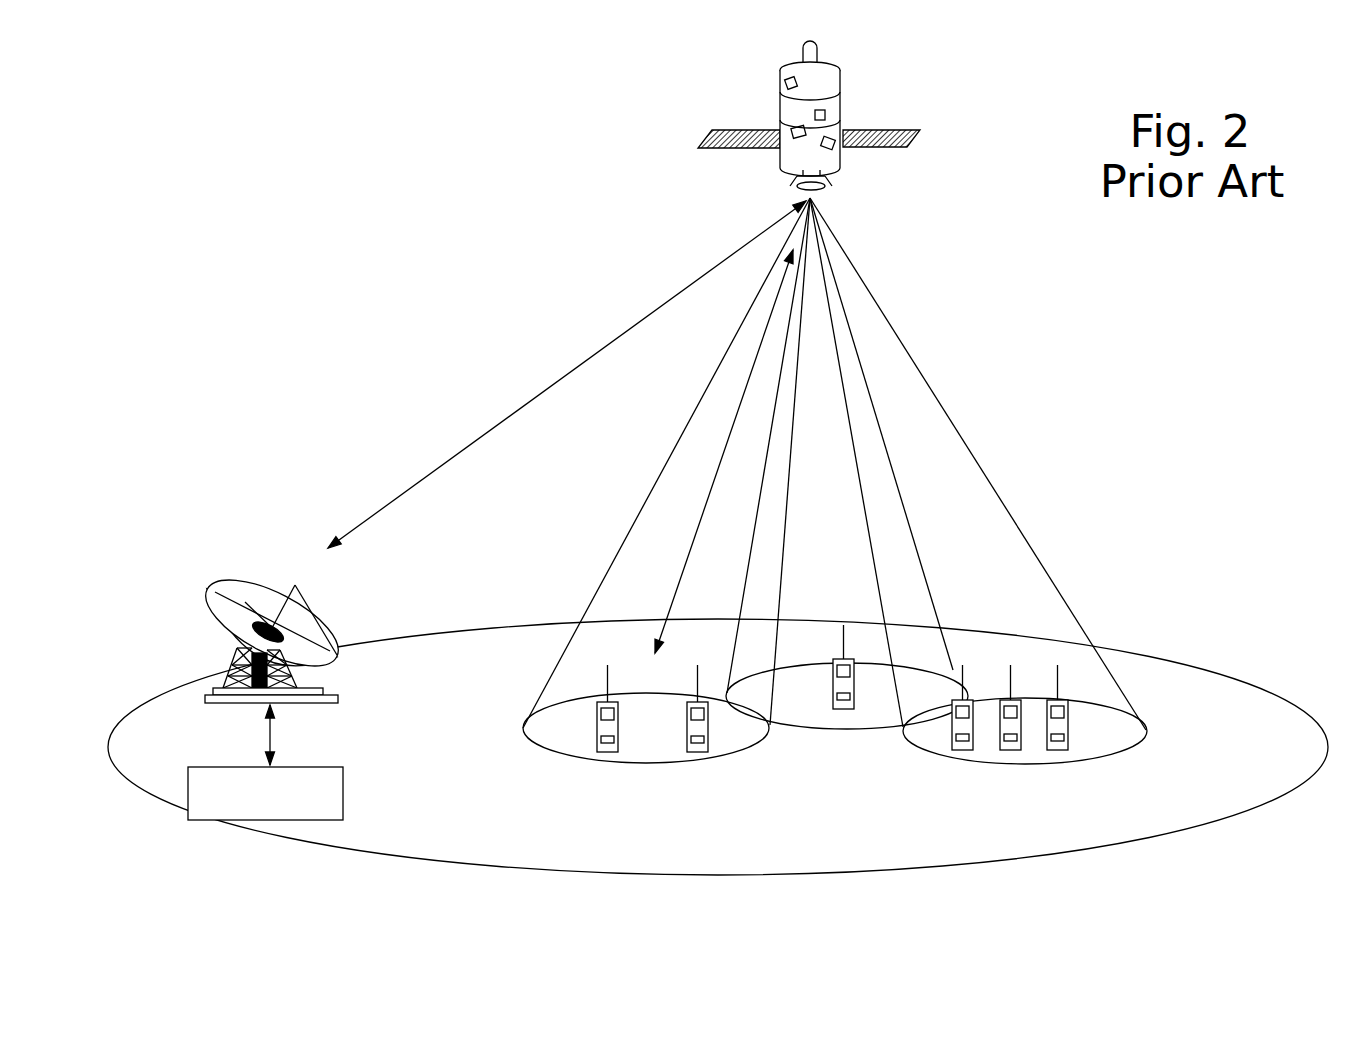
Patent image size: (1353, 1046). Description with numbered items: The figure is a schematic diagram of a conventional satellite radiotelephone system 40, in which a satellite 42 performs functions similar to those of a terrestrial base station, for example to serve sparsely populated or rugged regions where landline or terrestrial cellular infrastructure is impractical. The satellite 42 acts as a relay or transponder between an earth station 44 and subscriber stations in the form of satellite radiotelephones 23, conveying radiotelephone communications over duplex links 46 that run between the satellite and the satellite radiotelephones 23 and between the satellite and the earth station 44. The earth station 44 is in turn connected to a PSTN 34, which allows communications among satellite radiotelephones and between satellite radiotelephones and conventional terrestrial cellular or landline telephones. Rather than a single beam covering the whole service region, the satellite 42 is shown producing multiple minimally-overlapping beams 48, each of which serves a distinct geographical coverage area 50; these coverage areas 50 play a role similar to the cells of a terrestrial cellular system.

The satellite radiotelephone system 40 is at (520, 158).
The satellite 42 is at (947, 117).
The earth station 44 is at (228, 703).
The PSTN 34 is at (345, 793).
The duplex links 46 is at (505, 377).
The beams 48 is at (657, 430).
The satellite radiotelephones 23 is at (595, 722).
The coverage areas 50 is at (653, 763).